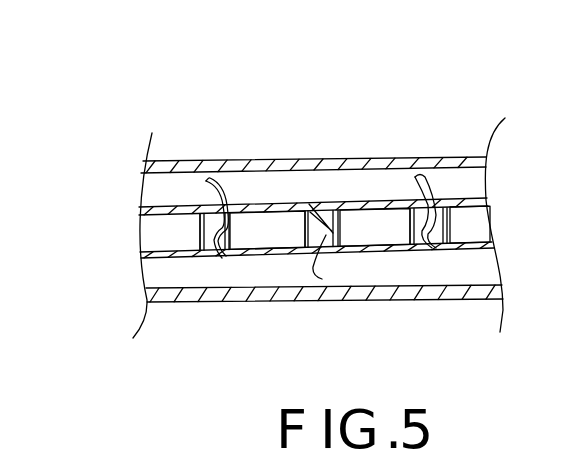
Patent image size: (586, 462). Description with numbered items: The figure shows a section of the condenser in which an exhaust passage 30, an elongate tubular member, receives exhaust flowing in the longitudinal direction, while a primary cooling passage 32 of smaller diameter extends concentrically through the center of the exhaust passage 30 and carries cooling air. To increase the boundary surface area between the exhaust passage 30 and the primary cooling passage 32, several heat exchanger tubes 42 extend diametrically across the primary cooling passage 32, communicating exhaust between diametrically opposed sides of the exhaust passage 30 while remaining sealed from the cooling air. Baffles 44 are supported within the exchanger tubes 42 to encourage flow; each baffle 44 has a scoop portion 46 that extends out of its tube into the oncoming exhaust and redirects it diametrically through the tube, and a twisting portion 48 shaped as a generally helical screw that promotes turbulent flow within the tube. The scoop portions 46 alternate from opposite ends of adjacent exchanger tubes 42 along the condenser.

The exhaust passage 30 is at (140, 188).
The primary cooling passage 32 is at (162, 230).
The heat exchanger tubes 42 is at (249, 232).
The baffles 44 is at (322, 195).
The scoop portion 46 is at (222, 205).
The twisting portion 48 is at (312, 203).